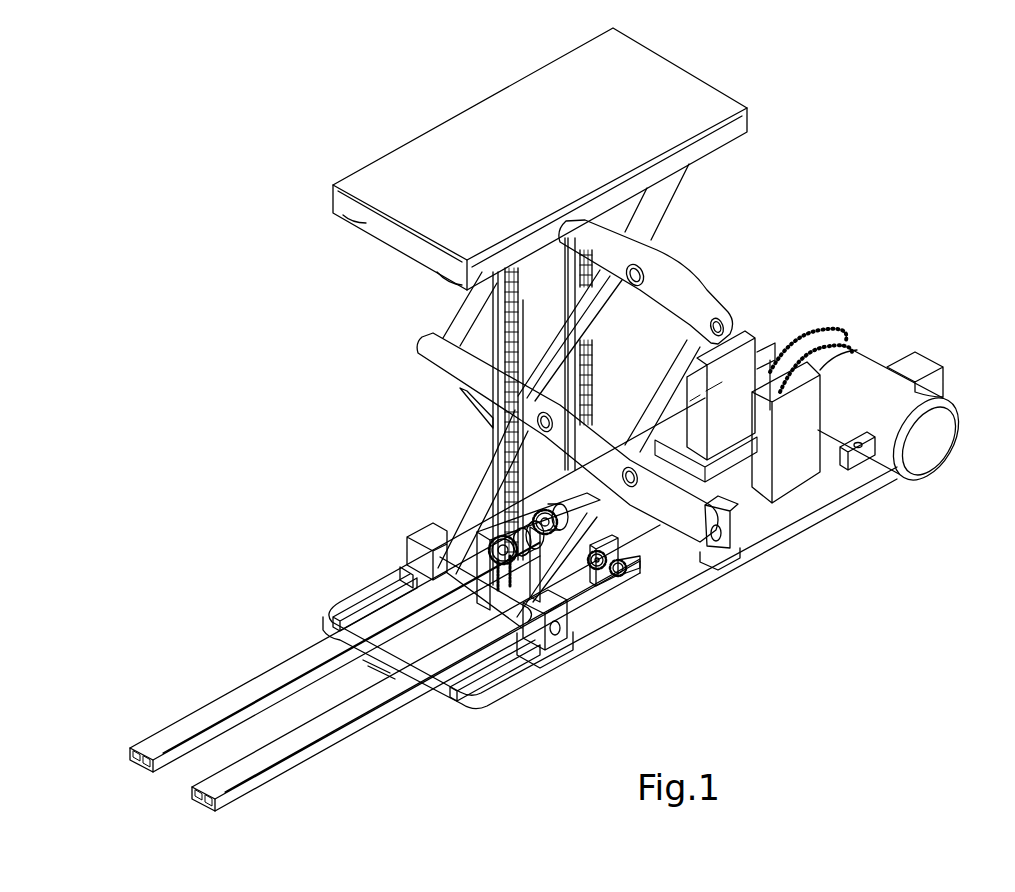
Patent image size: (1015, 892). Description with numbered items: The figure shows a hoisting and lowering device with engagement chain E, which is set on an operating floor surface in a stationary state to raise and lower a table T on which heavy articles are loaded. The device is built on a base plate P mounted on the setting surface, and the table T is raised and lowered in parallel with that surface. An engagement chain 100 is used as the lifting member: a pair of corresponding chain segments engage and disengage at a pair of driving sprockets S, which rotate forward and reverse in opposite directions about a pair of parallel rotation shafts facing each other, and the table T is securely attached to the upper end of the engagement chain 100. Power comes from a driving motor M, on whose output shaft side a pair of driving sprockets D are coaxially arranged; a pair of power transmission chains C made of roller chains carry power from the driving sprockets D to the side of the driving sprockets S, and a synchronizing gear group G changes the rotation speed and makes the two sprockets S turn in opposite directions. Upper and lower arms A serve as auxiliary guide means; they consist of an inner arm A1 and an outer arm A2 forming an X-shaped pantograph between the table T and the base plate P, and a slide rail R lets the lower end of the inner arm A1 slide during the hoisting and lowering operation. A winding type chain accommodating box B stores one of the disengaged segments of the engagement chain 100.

The hoisting and lowering device with engagement chain E is at (280, 137).
The table T is at (527, 164).
The arms A is at (762, 163).
The inner arm A1 is at (667, 195).
The outer arm A2 is at (665, 268).
The engagement chain 100 is at (503, 330).
The power transmission chains C is at (778, 340).
The driving sprockets D is at (826, 323).
The driving motor M is at (933, 450).
The winding type chain accommodating box B is at (798, 458).
The base plate P is at (660, 585).
The driving sprockets S is at (600, 580).
The synchronizing gear group G is at (490, 523).
The slide rail R is at (372, 580).